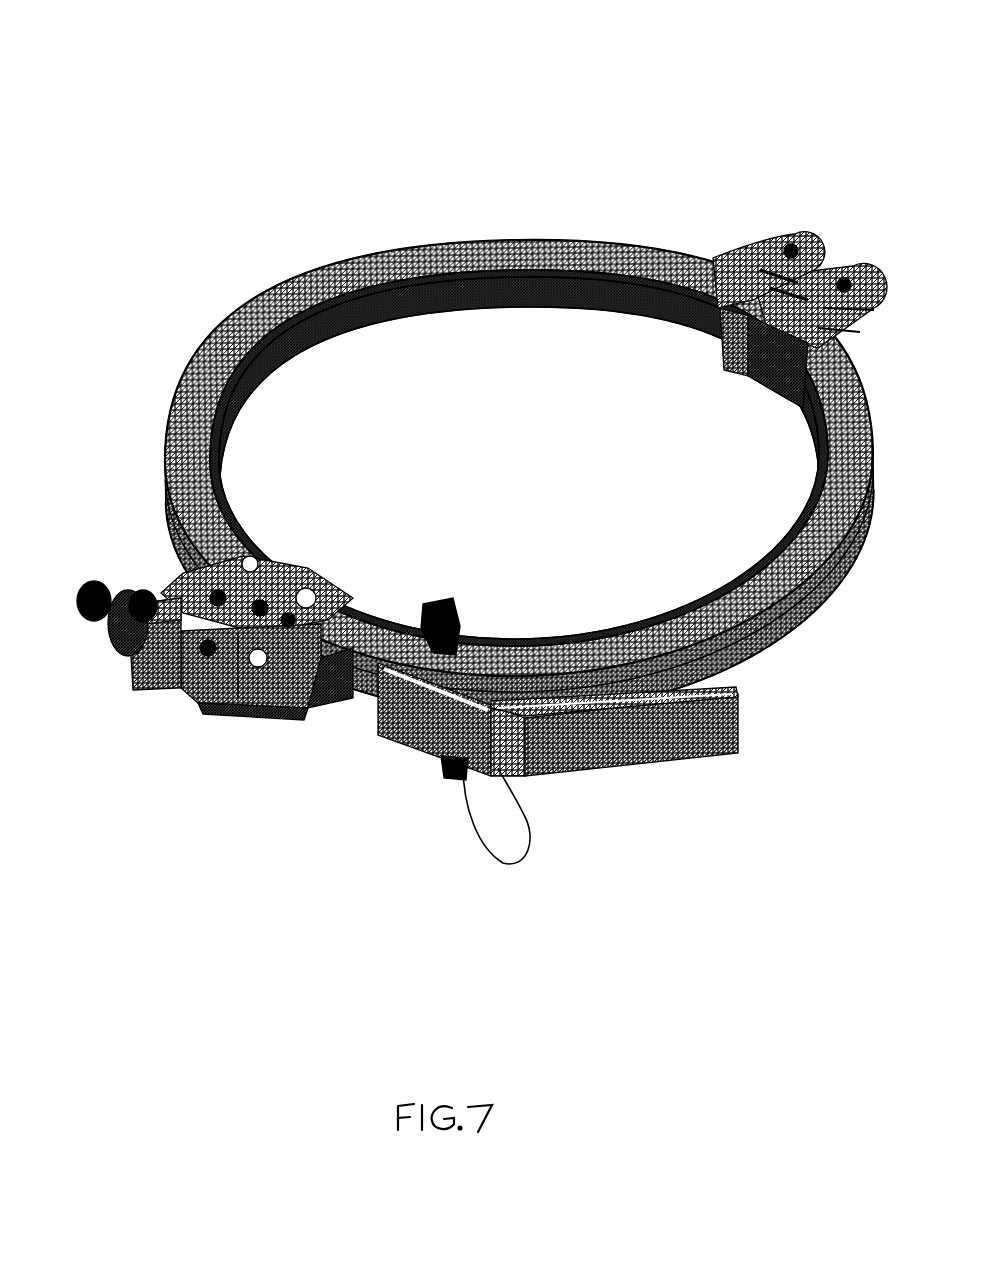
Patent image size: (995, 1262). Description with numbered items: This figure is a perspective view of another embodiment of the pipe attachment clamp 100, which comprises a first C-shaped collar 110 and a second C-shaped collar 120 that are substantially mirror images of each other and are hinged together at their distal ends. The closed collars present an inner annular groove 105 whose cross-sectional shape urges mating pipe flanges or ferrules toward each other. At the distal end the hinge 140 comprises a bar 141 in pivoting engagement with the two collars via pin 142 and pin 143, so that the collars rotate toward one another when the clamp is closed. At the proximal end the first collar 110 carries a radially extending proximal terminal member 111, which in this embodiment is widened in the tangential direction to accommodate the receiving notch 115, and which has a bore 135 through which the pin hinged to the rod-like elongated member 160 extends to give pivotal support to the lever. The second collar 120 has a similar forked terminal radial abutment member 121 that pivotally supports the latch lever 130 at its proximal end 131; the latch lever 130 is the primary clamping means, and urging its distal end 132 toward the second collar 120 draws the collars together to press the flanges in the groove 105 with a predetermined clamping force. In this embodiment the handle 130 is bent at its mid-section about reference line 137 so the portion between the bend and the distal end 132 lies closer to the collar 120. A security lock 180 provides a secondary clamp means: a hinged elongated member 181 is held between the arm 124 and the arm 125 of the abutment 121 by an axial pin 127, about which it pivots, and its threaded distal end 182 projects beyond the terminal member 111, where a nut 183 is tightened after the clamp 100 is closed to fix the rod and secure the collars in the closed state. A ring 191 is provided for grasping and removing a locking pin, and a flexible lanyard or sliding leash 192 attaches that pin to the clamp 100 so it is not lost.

The pipe attachment clamp 100 is at (172, 182).
The first C-shaped collar 110 is at (373, 245).
The inner annular groove 105 is at (448, 260).
The receiving notch 115 is at (183, 572).
The bore 135 is at (222, 535).
The second C-shaped collar 120 is at (778, 628).
The hinge 140 is at (775, 124).
The bar 141 is at (815, 235).
The pin 142 is at (745, 230).
The pin 143 is at (700, 357).
The terminal radial abutment member 121 is at (230, 703).
The arm 124 is at (305, 700).
The arm 125 is at (180, 708).
The proximal terminal member 111 is at (103, 682).
The security lock 180 is at (148, 703).
The elongated member 181 is at (127, 715).
The distal end of rod 182 is at (65, 600).
The nut 183 is at (105, 568).
The axial pin 127 is at (148, 593).
The latch lever 130 is at (636, 790).
The distal end of lever 132 is at (742, 722).
The reference line 137 is at (527, 770).
The elongated member 160 is at (337, 680).
The proximal end of lever 131 is at (387, 737).
The ring 191 is at (418, 590).
The flexible lanyard or sliding leash 192 is at (500, 850).